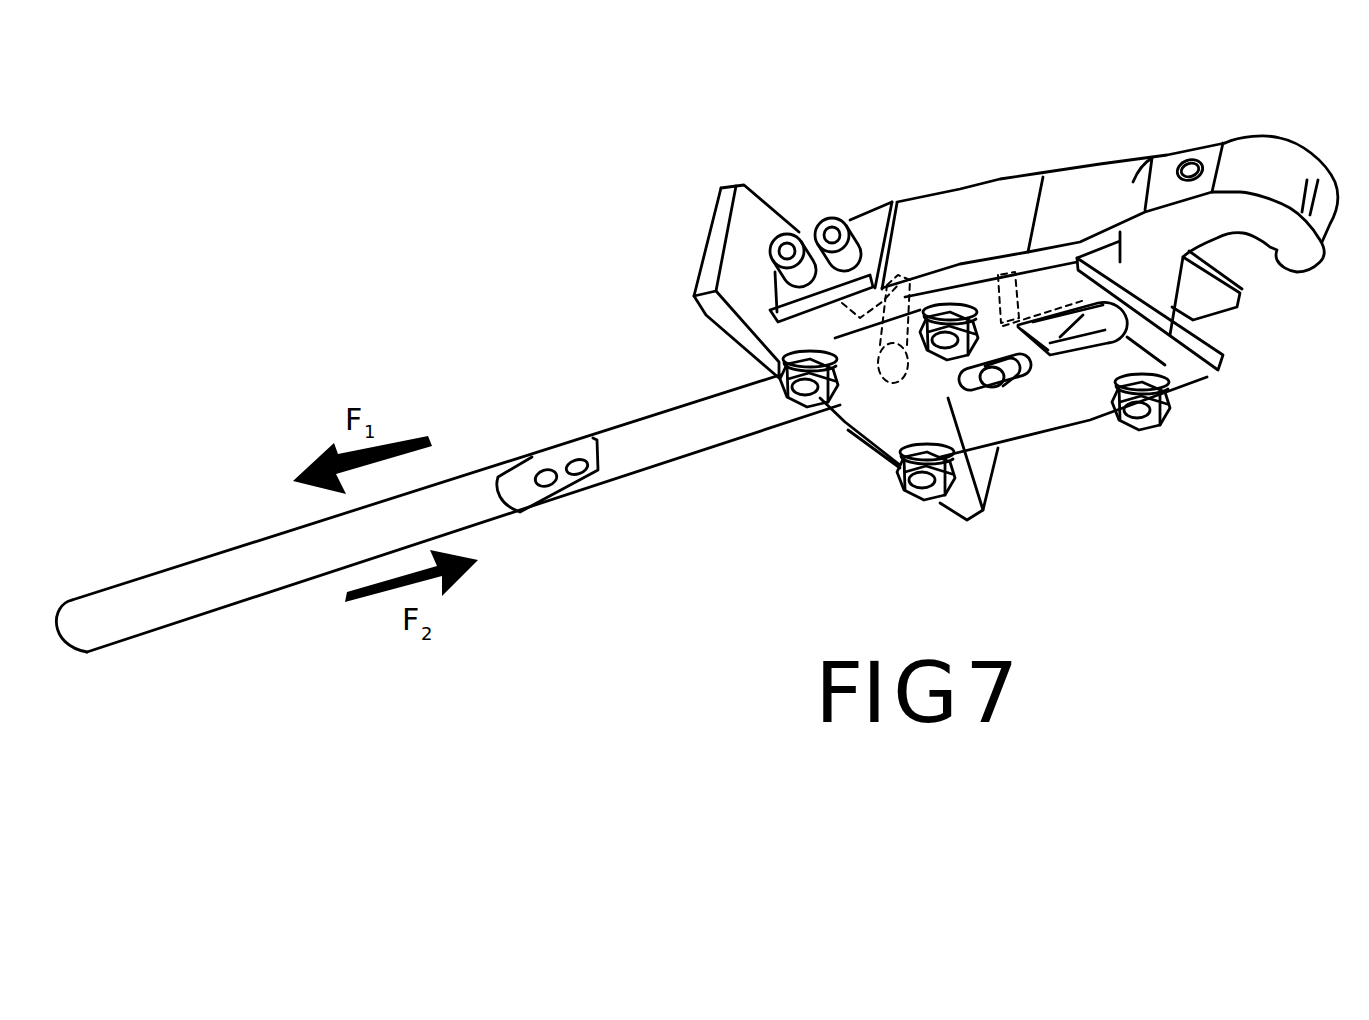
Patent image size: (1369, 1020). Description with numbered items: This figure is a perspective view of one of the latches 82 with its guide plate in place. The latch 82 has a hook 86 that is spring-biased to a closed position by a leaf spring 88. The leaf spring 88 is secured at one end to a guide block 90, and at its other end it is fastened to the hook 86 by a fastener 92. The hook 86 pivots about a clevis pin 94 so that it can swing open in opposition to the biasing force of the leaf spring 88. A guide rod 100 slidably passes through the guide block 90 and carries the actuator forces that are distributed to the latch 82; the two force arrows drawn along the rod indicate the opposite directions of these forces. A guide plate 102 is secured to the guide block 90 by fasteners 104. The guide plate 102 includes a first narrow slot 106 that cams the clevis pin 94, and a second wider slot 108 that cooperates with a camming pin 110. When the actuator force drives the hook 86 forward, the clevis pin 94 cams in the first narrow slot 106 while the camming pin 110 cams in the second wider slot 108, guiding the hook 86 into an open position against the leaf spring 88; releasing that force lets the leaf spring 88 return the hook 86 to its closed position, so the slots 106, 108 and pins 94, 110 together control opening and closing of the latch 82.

The latch 82 is at (1228, 545).
The hook 86 is at (1252, 158).
The leaf spring 88 is at (1005, 185).
The guide block 90 is at (748, 203).
The fastener 92 is at (1190, 157).
The clevis pin 94 is at (1010, 375).
The guide rod 100 is at (192, 608).
The guide plate 102 is at (1083, 313).
The fasteners 104 is at (958, 305).
The first narrow slot 106 is at (970, 382).
The second wider slot 108 is at (1060, 395).
The camming pin 110 is at (1212, 376).